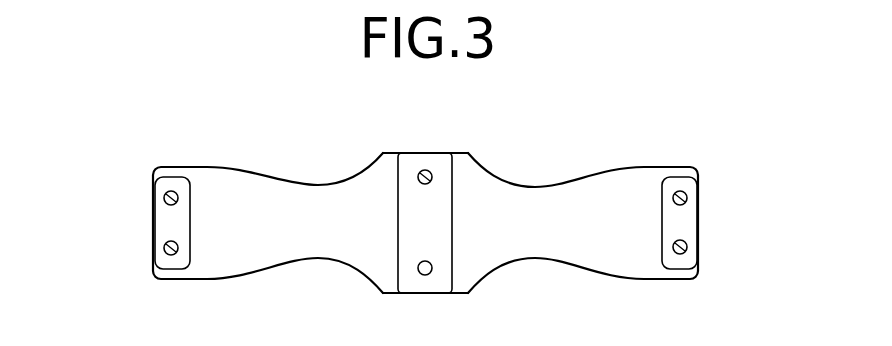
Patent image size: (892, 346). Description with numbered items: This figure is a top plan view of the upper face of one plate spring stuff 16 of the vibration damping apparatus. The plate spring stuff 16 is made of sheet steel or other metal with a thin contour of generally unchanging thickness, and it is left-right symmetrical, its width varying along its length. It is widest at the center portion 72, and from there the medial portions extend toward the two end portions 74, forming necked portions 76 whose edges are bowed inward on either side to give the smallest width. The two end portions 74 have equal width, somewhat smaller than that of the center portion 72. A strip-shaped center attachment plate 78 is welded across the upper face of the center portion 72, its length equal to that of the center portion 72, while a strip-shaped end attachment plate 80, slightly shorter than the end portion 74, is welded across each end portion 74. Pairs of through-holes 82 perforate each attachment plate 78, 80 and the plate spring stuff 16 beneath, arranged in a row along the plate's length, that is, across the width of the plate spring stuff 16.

The plate spring stuff 16 is at (600, 130).
The center portion 72 is at (458, 168).
The end portion 74 is at (198, 255).
The necked portion 76 is at (304, 243).
The center attachment plate 78 is at (408, 195).
The end attachment plate 80 is at (168, 228).
The through-hole 82 is at (164, 198).